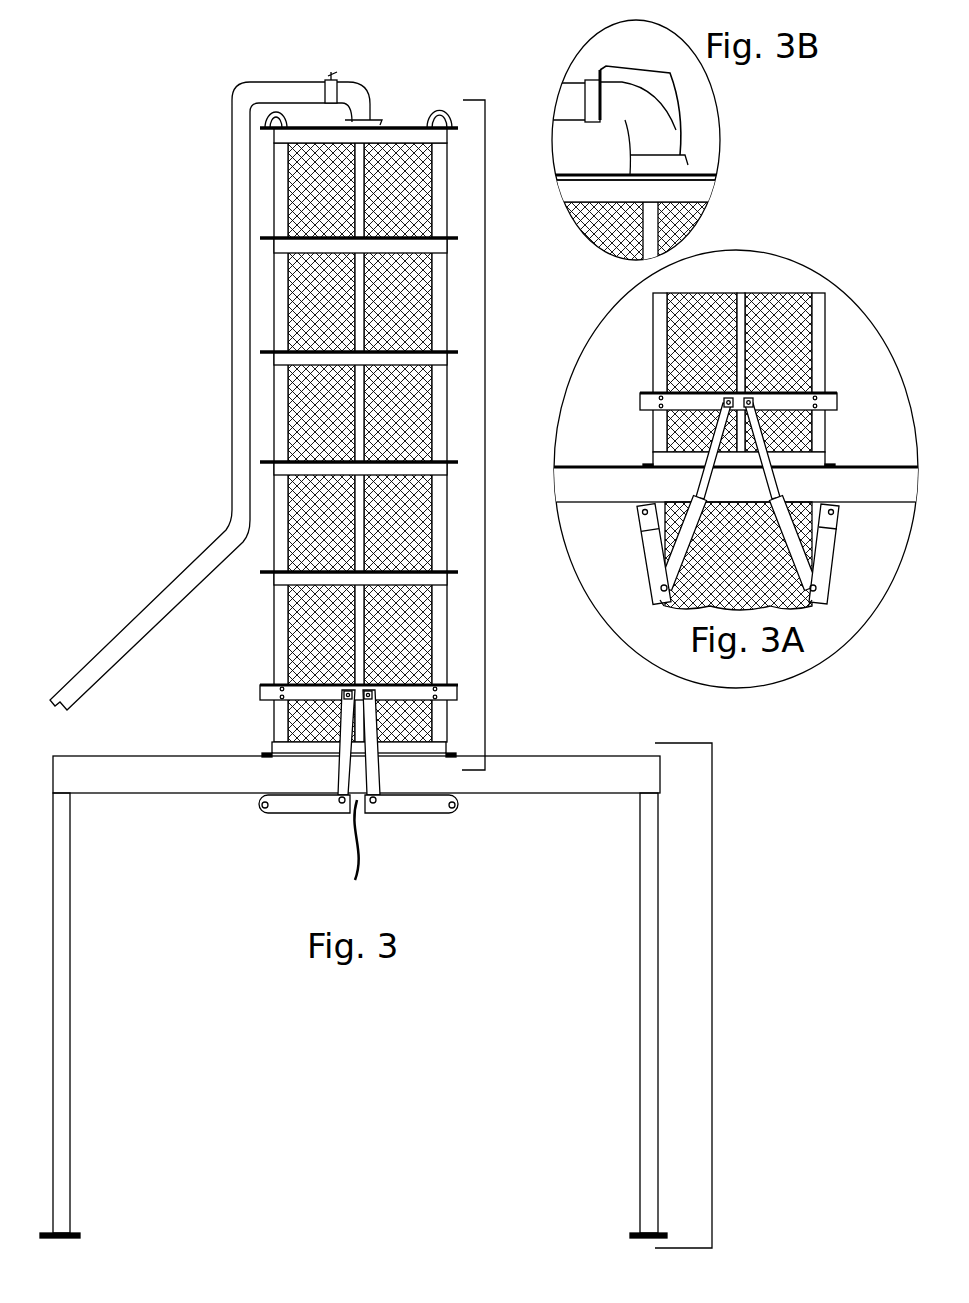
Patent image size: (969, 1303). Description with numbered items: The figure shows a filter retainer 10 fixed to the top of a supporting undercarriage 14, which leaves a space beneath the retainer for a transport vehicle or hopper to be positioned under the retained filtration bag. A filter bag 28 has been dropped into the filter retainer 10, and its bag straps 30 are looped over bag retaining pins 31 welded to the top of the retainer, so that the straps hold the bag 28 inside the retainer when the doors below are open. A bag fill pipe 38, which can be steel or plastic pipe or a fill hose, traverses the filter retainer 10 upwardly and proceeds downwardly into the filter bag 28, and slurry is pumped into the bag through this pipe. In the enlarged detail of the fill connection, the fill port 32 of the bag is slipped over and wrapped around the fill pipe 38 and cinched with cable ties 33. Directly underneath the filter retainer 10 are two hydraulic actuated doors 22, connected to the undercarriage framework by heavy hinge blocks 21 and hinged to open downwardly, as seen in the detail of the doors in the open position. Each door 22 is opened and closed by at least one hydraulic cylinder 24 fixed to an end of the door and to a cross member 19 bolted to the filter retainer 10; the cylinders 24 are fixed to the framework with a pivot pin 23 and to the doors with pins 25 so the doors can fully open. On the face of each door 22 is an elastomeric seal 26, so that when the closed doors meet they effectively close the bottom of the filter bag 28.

In FIG. 3, the filter retainer 10 is at (338, 402).
In FIG. 3, the supporting undercarriage 14 is at (712, 997).
In FIG. 3A, the cross member 19 is at (810, 404).
In FIG. 3, the hinge blocks 21 is at (453, 805).
In FIG. 3, the hydraulic actuated doors 22 is at (410, 805).
In FIG. 3A, the hydraulic actuated doors 22 is at (826, 548).
In FIG. 3, the pivot pin 23 is at (370, 695).
In FIG. 3A, the pivot pin 23 is at (745, 400).
In FIG. 3, the hydraulic cylinders 24 is at (370, 752).
In FIG. 3A, the hydraulic cylinders 24 is at (790, 465).
In FIG. 3A, the pins 25 is at (818, 590).
In FIG. 3, the elastomeric seal 26 is at (365, 808).
In FIG. 3A, the elastomeric seal 26 is at (815, 605).
In FIG. 3, the filter bag 28 is at (310, 205).
In FIG. 3, the bag straps 30 is at (447, 108).
In FIG. 3, the bag retaining pins 31 is at (445, 108).
In FIG. 3B, the fill port 32 is at (625, 118).
In FIG. 3B, the cable ties 33 is at (648, 114).
In FIG. 3, the bag fill pipe 38 is at (240, 425).